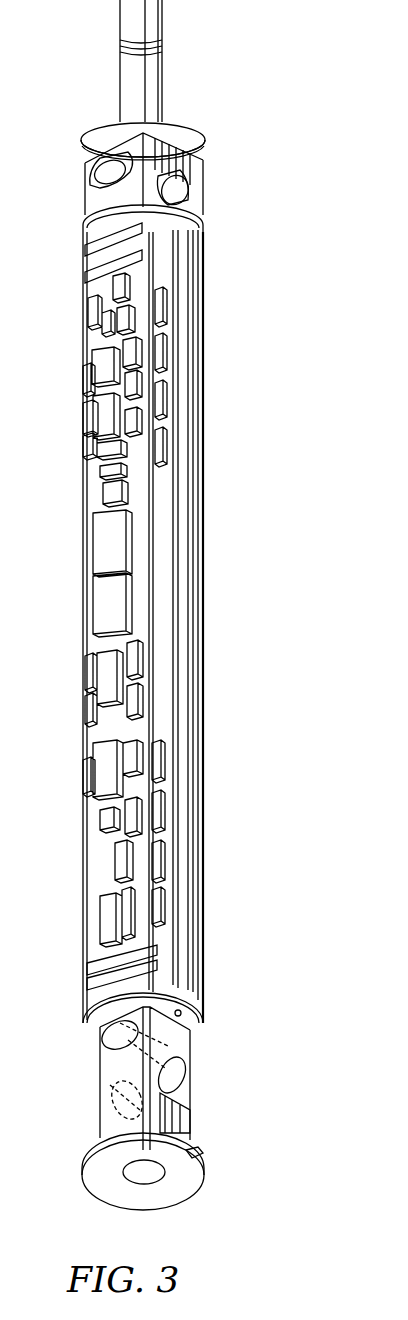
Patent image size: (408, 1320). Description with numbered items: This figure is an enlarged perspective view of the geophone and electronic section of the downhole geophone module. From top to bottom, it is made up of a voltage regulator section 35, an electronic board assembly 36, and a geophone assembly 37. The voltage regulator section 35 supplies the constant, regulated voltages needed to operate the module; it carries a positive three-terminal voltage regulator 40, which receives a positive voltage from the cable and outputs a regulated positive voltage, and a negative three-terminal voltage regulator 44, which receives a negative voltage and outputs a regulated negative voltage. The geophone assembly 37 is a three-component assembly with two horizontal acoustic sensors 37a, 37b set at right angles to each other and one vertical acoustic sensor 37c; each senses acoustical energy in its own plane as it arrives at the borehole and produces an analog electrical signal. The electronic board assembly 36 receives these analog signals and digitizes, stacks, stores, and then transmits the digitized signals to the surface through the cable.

The voltage regulator section 35 is at (68, 220).
The electronic board assembly 36 is at (238, 635).
The geophone assembly 37 is at (213, 1109).
The horizontal acoustic sensor 37a is at (110, 1040).
The horizontal acoustic sensor 37b is at (175, 1080).
The vertical acoustic sensor 37c is at (138, 1185).
The positive three-terminal voltage regulator 40 is at (103, 172).
The negative three-terminal voltage regulator 44 is at (181, 190).